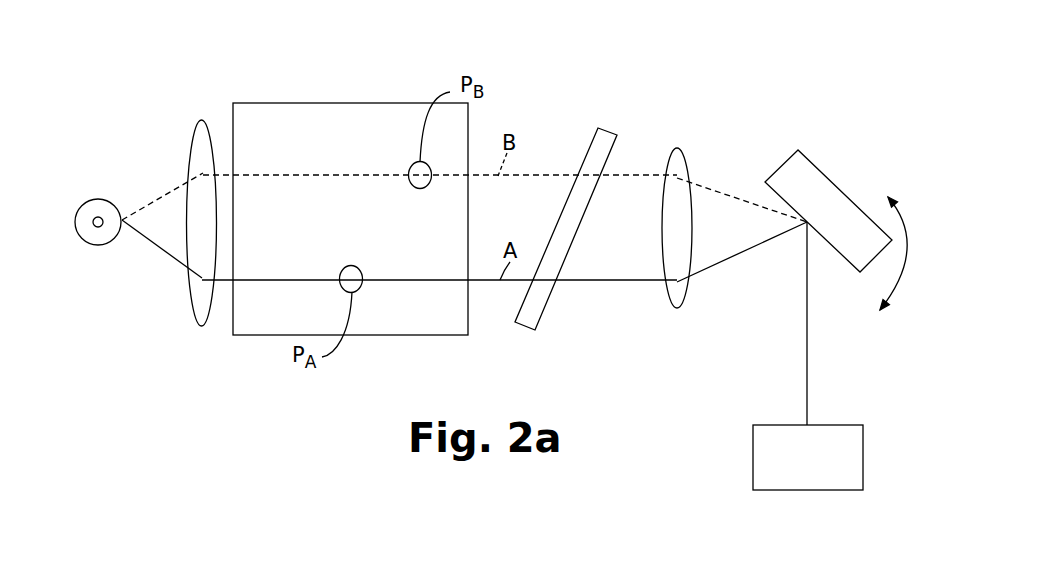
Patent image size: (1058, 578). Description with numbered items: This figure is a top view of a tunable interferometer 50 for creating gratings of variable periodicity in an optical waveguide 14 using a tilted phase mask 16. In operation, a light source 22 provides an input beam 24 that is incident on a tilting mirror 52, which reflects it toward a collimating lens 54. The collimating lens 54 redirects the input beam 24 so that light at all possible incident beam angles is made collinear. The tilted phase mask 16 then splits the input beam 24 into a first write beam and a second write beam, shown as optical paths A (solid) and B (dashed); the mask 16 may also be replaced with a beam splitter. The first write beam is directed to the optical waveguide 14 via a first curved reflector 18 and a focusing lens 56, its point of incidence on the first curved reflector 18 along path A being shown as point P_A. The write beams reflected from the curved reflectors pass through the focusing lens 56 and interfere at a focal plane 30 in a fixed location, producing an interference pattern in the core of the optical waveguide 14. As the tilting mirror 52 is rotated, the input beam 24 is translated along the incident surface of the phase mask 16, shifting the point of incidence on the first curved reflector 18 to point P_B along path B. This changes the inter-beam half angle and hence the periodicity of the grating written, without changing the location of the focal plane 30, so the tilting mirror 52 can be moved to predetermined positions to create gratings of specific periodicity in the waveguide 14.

The optical waveguide 14 is at (102, 199).
The focal plane 30 is at (124, 208).
The focusing lens 56 is at (200, 122).
The first curved reflector 18 is at (365, 235).
The tilted phase mask 16 is at (608, 128).
The collimating lens 54 is at (680, 150).
The tilting mirror 52 is at (828, 177).
The input beam 24 is at (807, 323).
The light source 22 is at (760, 490).
The tunable interferometer 50 is at (576, 70).